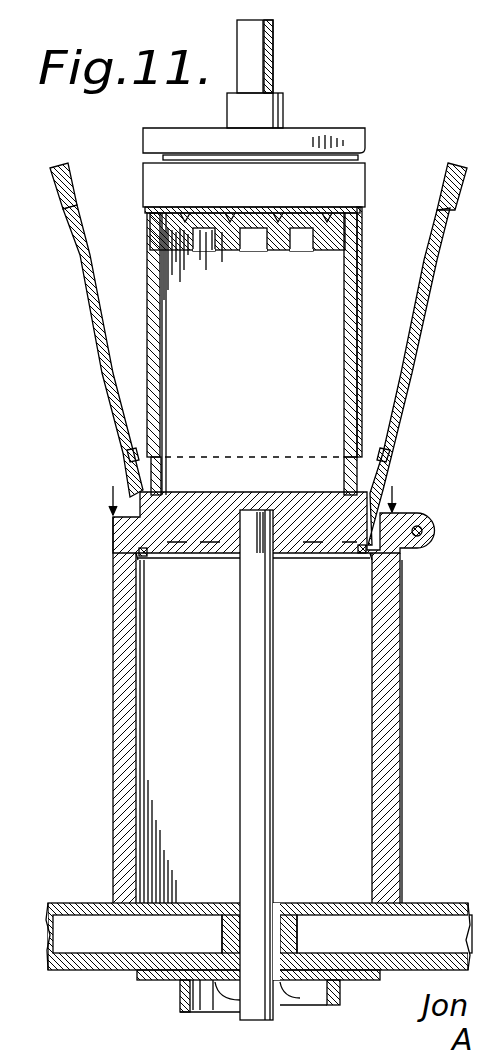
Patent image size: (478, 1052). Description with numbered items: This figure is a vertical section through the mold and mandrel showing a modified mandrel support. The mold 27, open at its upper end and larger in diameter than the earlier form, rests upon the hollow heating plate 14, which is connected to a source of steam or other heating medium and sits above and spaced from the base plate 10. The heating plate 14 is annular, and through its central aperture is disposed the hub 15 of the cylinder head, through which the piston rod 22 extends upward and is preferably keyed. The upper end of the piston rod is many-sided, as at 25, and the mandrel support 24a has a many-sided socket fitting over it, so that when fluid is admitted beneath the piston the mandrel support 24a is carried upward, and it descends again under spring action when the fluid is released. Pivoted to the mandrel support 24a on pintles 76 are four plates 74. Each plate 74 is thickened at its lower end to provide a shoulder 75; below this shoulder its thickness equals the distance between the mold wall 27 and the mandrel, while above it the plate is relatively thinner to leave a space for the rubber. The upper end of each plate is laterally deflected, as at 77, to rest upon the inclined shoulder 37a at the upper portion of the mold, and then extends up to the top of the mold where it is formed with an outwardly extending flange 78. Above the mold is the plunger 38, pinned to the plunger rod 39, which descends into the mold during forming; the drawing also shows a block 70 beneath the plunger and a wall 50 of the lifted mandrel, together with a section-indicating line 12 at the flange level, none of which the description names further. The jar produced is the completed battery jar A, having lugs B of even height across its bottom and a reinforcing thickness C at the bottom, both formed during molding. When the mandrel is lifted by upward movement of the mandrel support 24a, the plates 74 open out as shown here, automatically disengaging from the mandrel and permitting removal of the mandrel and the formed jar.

The plunger rod 39 is at (263, 46).
The plunger 38 is at (305, 133).
The cap block 70 is at (360, 193).
The reinforcing thickness C is at (197, 207).
The lugs B is at (235, 214).
The battery jar A is at (147, 298).
The cylinder wall 50 is at (344, 386).
The plates 74 is at (107, 372).
The outwardly extending flange 78 is at (56, 172).
The laterally deflected portion 77 is at (80, 208).
The shoulder 75 is at (128, 453).
The mandrel support 24a is at (293, 497).
The section line 12 is at (111, 503).
The inclined shoulder 37a is at (413, 559).
The pintle 76 is at (145, 558).
The mold 27 is at (112, 732).
The heating plate 14 is at (88, 903).
The hub 15 is at (284, 940).
The plate 10 is at (180, 1000).
The piston rod 22 is at (267, 762).
The many-sided upper end 25 is at (252, 540).